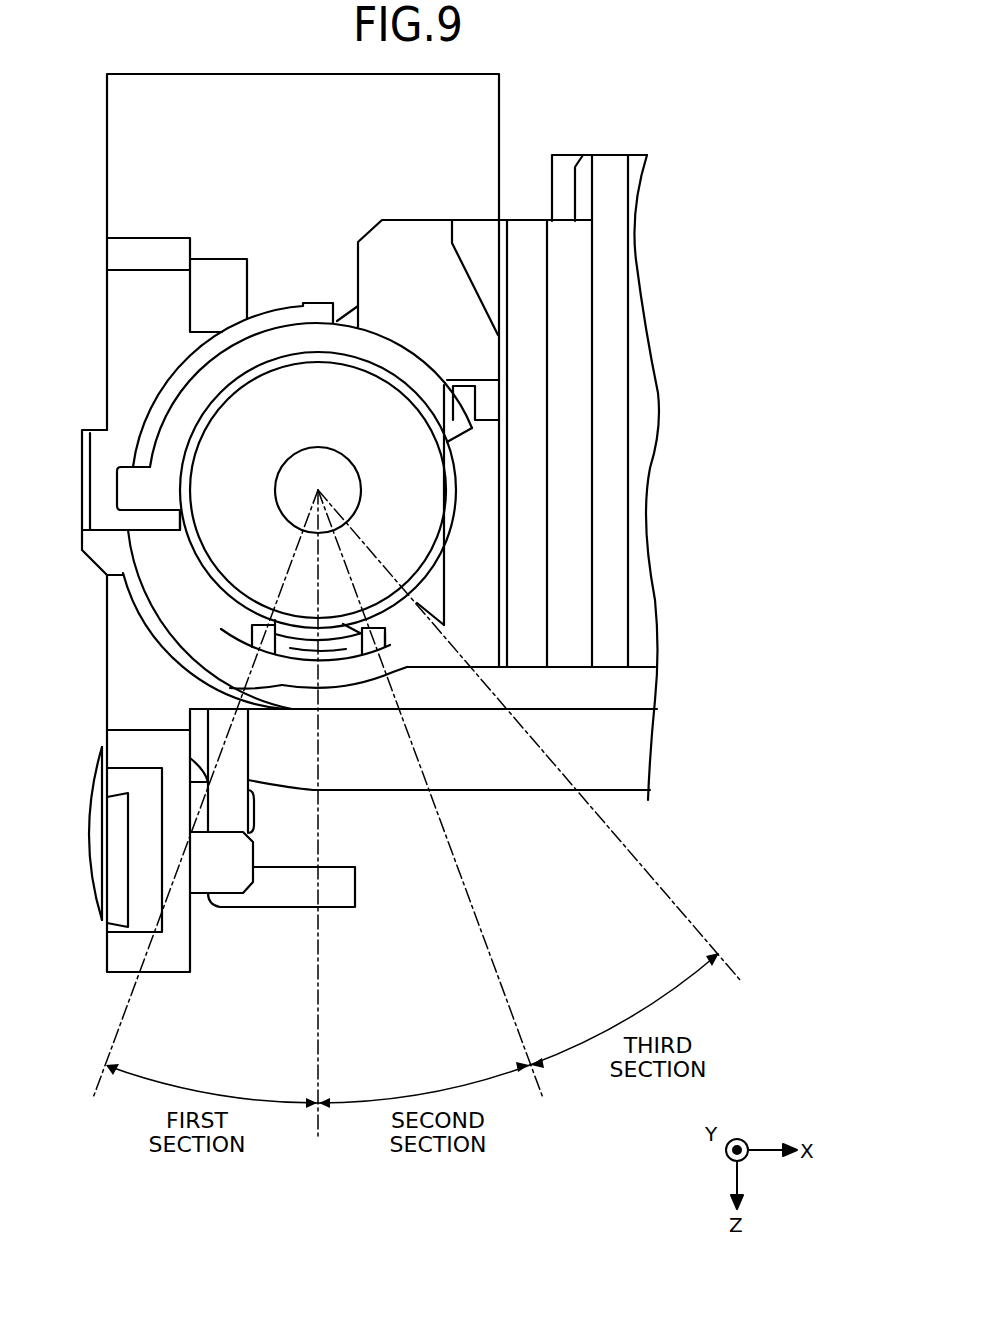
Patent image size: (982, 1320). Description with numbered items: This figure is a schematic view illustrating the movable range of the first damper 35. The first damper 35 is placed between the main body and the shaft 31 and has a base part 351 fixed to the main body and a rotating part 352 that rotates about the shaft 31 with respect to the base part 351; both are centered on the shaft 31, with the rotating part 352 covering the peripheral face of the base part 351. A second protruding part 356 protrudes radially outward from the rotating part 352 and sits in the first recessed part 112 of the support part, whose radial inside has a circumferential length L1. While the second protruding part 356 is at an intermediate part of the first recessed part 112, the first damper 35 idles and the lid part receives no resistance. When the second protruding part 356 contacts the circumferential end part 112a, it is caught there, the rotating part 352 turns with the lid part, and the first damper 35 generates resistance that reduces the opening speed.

The first damper 35 is at (216, 386).
The shaft 31 is at (297, 472).
The base part 351 is at (210, 482).
The rotating part 352 is at (187, 518).
The second protruding part 356 is at (377, 631).
The circumferential length L1 is at (302, 656).
The first recessed part 112 is at (292, 687).
The circumferential end part 112a is at (385, 648).